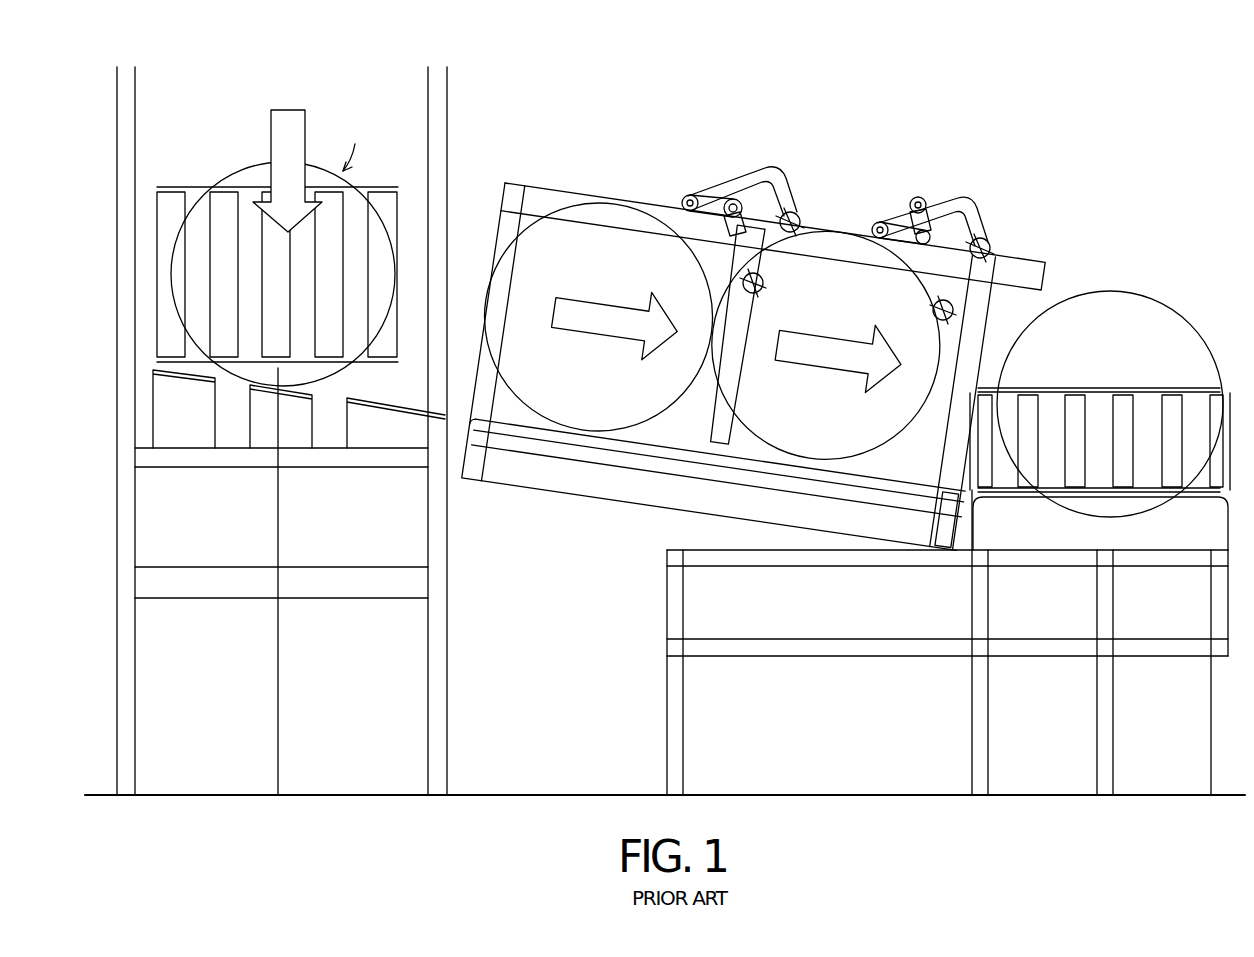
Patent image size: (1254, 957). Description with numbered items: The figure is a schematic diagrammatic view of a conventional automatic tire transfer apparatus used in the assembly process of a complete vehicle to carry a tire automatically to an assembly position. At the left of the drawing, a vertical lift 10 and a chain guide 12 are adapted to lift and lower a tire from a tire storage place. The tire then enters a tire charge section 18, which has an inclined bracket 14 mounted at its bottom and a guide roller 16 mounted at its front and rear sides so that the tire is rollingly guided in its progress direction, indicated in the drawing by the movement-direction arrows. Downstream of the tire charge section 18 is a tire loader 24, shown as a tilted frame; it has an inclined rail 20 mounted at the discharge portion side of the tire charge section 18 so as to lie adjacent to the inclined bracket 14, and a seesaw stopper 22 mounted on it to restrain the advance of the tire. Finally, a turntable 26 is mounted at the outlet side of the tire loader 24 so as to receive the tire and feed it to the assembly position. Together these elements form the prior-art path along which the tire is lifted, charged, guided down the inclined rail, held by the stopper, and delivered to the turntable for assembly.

The vertical lift 10 is at (438, 102).
The chain guide 12 is at (466, 101).
The inclined bracket 14 is at (182, 380).
The guide roller 16 is at (390, 198).
The tire charge section 18 is at (291, 215).
The inclined rail 20 is at (670, 447).
The seesaw stopper 22 is at (786, 190).
The tire loader 24 is at (752, 334).
The turntable 26 is at (1118, 385).